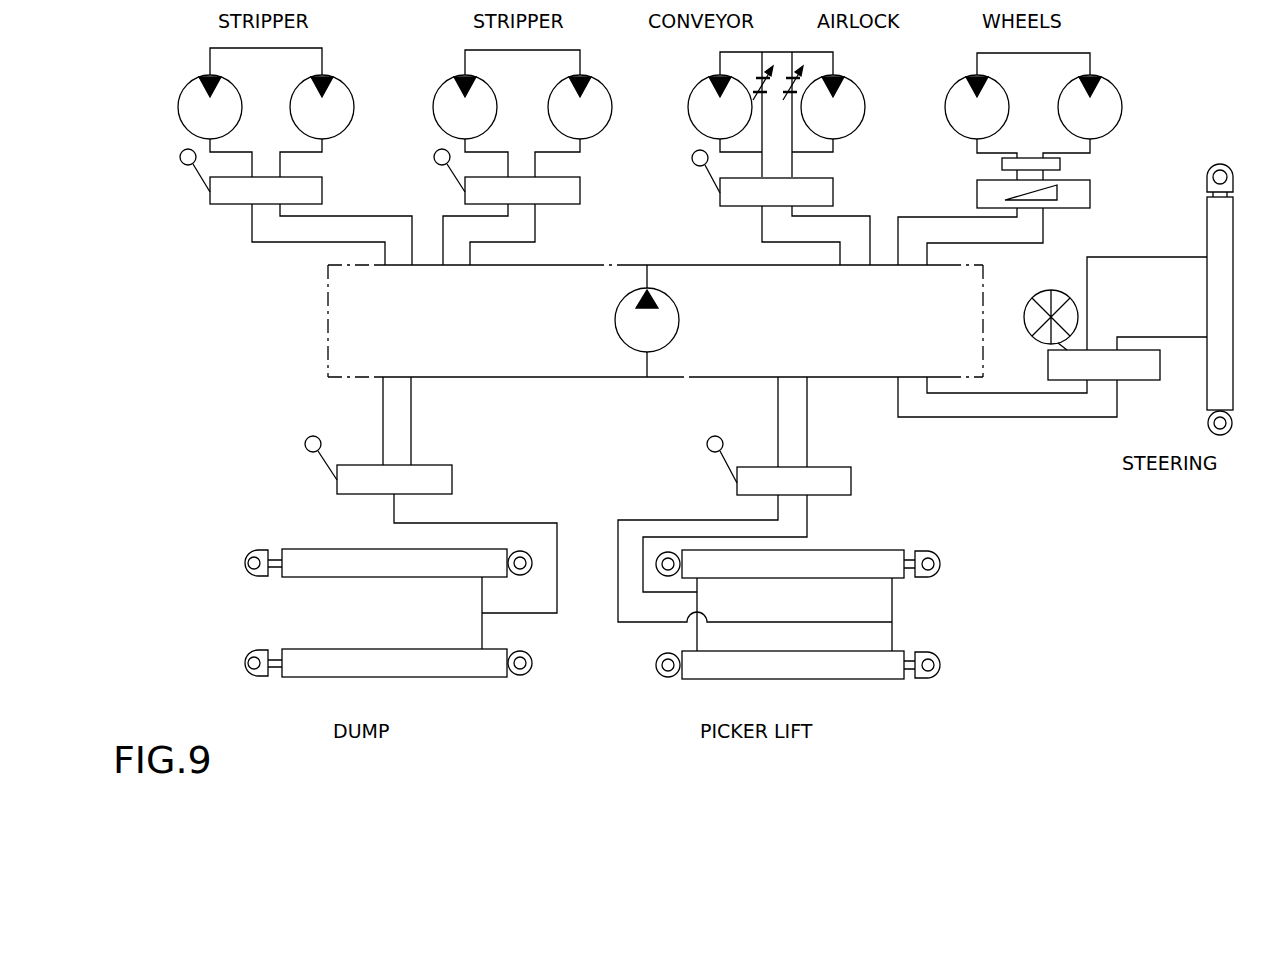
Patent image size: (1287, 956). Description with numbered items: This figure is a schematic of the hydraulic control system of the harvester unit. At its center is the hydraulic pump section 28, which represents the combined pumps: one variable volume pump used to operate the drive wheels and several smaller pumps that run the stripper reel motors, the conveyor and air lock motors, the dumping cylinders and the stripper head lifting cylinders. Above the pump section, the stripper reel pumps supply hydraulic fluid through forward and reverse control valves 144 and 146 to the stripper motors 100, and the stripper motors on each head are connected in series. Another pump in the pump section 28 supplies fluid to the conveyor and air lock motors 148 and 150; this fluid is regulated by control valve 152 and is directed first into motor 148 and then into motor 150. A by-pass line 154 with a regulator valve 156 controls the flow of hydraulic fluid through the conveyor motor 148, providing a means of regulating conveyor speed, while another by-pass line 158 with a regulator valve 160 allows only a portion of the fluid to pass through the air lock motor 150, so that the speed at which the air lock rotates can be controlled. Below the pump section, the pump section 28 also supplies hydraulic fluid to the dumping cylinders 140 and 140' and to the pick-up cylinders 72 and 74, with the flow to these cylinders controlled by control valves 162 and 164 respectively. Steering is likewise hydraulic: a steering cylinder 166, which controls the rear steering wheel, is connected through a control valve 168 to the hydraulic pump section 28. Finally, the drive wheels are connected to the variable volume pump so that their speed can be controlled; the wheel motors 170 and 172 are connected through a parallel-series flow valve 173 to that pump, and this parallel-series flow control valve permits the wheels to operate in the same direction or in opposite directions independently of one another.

The hydraulic pump section 28 is at (326, 326).
The pick-up cylinder 72 is at (853, 681).
The pick-up cylinder 74 is at (873, 549).
The stripper motor 100 is at (178, 118).
The dumping cylinder 140 is at (388, 599).
The dumping cylinder 140' is at (388, 645).
The forward and reverse control valve 144 is at (245, 206).
The forward and reverse control valve 146 is at (580, 196).
The conveyor motor 148 is at (690, 125).
The air lock motor 150 is at (863, 109).
The control valve 152 is at (835, 192).
The by-pass line 154 is at (760, 72).
The regulator valve 156 is at (757, 80).
The by-pass line 158 is at (797, 72).
The regulator valve 160 is at (800, 80).
The control valve 162 is at (453, 479).
The control valve 164 is at (853, 481).
The steering cylinder 166 is at (1233, 348).
The control valve 168 is at (1133, 382).
The wheel motor 170 is at (950, 131).
The wheel motor 172 is at (1118, 116).
The parallel-series flow valve 173 is at (1090, 198).